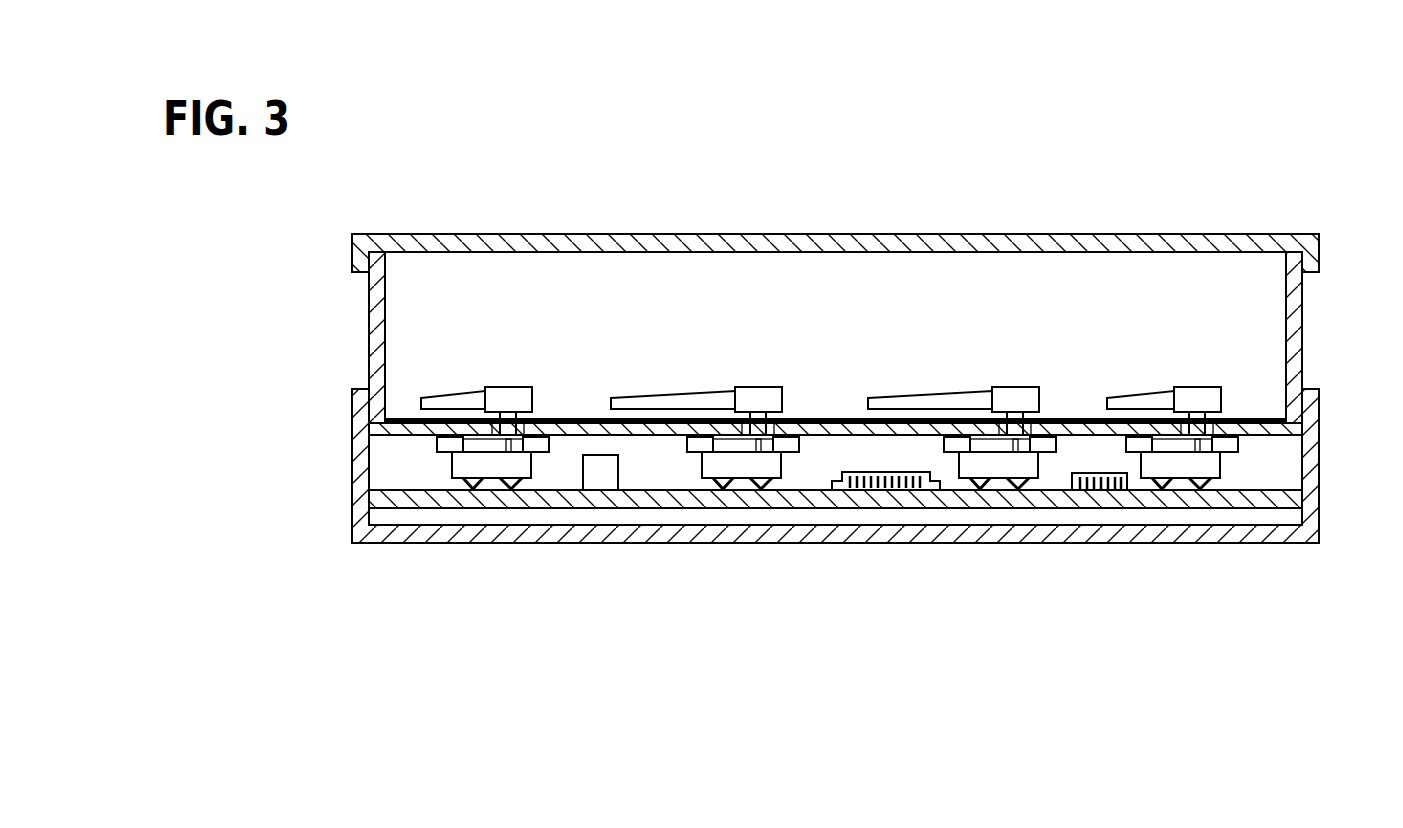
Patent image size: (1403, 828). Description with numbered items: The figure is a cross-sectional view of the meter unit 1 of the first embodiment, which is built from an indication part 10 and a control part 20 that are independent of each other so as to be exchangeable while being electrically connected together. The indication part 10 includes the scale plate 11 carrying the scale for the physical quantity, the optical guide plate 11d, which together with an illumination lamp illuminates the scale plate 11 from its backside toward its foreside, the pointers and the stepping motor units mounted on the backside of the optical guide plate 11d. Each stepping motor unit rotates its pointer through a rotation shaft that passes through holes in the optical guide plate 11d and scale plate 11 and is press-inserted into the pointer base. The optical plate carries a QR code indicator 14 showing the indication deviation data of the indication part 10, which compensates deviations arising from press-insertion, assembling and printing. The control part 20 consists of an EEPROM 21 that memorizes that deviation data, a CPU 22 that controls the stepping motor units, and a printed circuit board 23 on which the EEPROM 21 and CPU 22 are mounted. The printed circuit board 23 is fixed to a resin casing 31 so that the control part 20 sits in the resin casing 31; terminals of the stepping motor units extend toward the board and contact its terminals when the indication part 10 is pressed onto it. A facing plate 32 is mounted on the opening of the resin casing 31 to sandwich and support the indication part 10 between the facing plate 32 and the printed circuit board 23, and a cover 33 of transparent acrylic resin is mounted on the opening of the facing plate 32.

The meter unit 1 is at (1340, 248).
The indication part 10 is at (1240, 379).
The scale plate 11 is at (1254, 422).
The optical guide plate 11d is at (390, 436).
The QR code indicator 14 is at (1270, 433).
The control part 20 is at (1256, 489).
The EEPROM 21 is at (1083, 473).
The CPU 22 is at (897, 472).
The printed circuit board 23 is at (618, 493).
The resin casing 31 is at (352, 483).
The facing plate 32 is at (368, 322).
The cover 33 is at (412, 233).